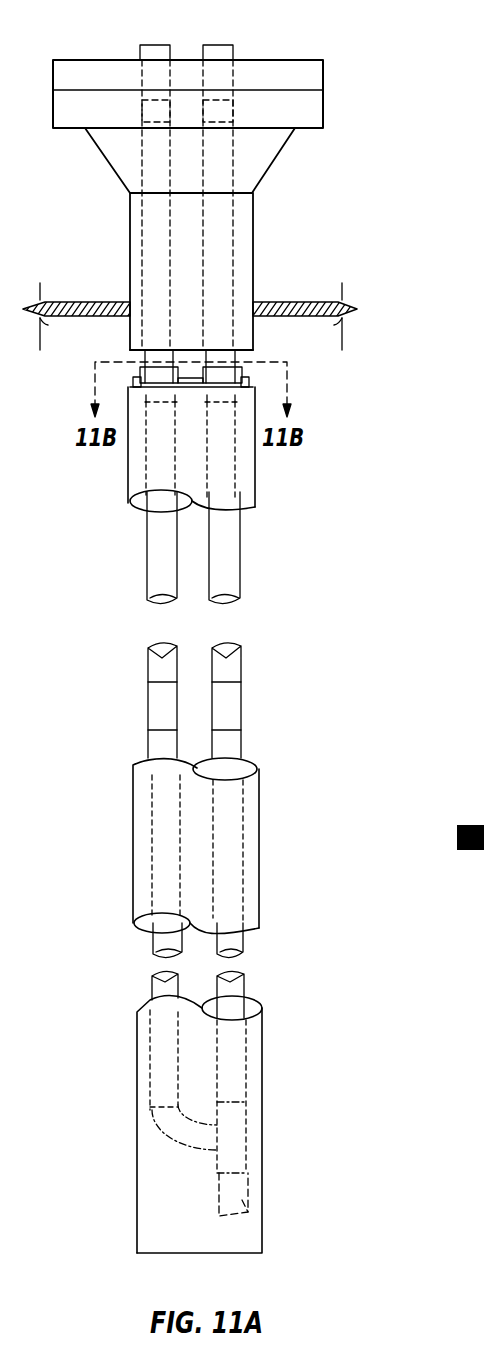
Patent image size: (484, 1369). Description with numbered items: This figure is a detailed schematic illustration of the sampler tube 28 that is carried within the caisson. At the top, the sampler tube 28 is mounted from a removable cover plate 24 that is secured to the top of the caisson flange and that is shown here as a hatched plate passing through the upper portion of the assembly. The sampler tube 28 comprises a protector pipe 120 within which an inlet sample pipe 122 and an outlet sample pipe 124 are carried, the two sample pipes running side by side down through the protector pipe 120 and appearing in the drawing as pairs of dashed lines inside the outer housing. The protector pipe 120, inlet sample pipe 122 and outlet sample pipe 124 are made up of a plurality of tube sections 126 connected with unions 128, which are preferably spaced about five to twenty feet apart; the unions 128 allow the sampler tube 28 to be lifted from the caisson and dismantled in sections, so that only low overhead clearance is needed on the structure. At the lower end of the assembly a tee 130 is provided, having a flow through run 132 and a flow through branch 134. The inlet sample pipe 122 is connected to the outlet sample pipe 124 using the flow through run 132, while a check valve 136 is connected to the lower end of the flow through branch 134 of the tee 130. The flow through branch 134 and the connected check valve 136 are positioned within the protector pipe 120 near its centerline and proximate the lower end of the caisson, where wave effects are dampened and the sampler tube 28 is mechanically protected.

The sampler tube 28 is at (337, 206).
The removable cover plate 24 is at (191, 299).
The protector pipe 120 is at (196, 820).
The inlet sample pipe 122 is at (126, 746).
The outlet sample pipe 124 is at (266, 755).
The tube sections 126 is at (186, 690).
The unions 128 is at (192, 706).
The tee 130 is at (276, 1167).
The flow through run 132 is at (130, 1144).
The flow through branch 134 is at (273, 1123).
The check valve 136 is at (285, 1226).